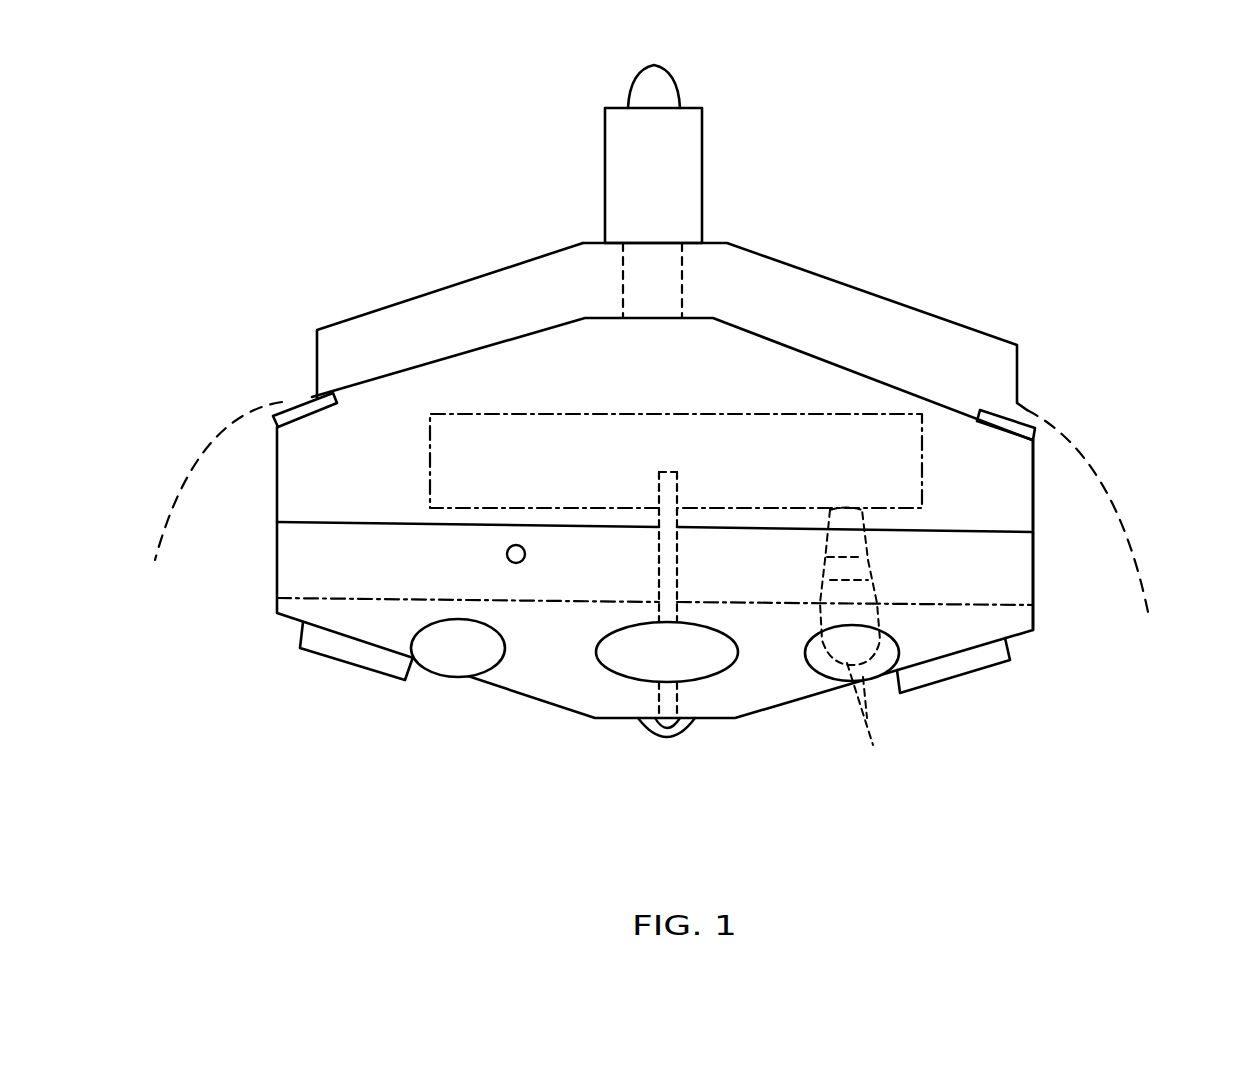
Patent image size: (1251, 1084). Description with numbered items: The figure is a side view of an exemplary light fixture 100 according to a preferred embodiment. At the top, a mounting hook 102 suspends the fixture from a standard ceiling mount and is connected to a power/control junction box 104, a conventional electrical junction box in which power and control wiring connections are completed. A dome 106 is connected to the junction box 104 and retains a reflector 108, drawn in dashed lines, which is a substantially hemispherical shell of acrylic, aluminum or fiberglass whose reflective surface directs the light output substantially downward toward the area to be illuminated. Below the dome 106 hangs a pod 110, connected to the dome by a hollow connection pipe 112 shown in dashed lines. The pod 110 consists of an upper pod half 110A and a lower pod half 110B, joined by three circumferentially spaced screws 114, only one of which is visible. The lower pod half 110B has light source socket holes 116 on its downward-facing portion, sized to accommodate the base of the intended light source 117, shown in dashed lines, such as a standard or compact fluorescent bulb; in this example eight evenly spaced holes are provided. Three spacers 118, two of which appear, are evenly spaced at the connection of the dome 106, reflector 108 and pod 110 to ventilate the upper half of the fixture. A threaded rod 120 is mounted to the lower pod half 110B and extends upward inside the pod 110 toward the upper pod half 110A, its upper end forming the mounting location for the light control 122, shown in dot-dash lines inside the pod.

The light fixture 100 is at (392, 820).
The mounting hook 102 is at (670, 72).
The power/control junction box 104 is at (702, 165).
The dome 106 is at (977, 330).
The reflector 108 is at (213, 438).
The pod 110 is at (277, 562).
The upper pod half 110A is at (1033, 505).
The lower pod half 110B is at (1033, 580).
The hollow connection pipe 112 is at (623, 273).
The screws 114 is at (517, 563).
The light source socket holes 116 is at (443, 677).
The light source 117 is at (859, 643).
The spacers 118 is at (300, 398).
The threaded rod 120 is at (675, 738).
The light control 122 is at (923, 503).